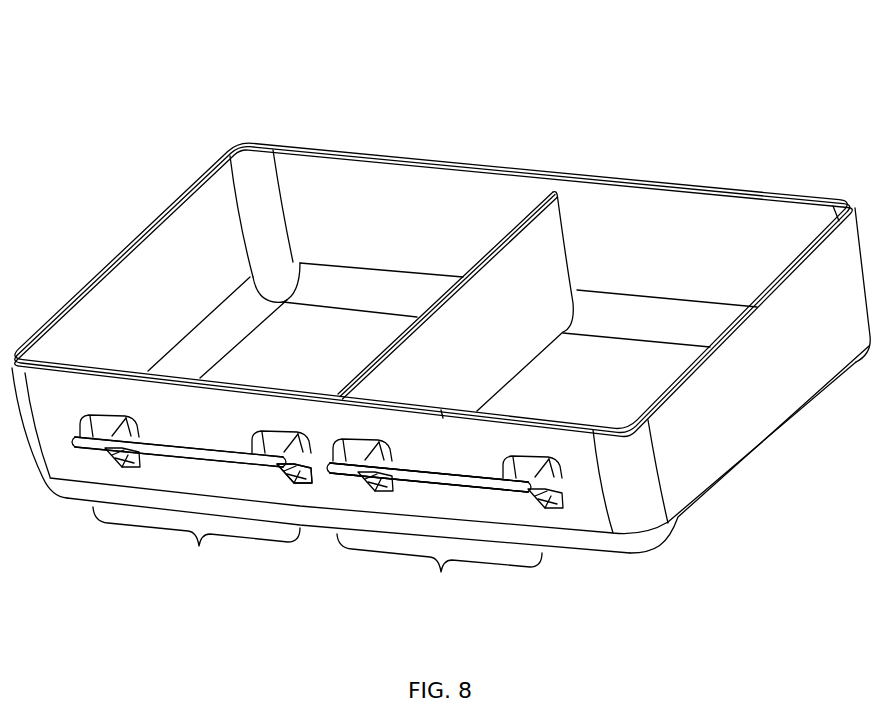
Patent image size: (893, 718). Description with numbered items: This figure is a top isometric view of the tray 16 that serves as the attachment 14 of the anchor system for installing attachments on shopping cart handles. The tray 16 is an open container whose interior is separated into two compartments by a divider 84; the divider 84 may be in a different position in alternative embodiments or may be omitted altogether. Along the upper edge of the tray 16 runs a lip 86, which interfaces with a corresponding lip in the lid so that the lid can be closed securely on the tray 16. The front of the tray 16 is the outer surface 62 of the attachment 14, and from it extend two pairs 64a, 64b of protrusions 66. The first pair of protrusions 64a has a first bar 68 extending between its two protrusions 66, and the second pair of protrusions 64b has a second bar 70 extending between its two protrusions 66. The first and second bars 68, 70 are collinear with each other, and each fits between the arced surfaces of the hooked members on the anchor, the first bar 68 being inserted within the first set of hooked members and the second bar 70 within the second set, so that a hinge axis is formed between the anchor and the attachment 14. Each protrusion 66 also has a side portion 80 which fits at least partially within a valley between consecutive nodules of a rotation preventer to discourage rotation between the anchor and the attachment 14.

The attachment 14 is at (455, 70).
The tray 16 is at (487, 181).
The outer surface 62 is at (341, 432).
The first pair of protrusions 64a is at (436, 535).
The second pair of protrusions 64b is at (187, 509).
The protrusion 66 is at (103, 430).
The first bar 68 is at (423, 470).
The second bar 70 is at (180, 447).
The side portion 80 is at (298, 455).
The divider 84 is at (491, 343).
The lip 86 is at (275, 395).